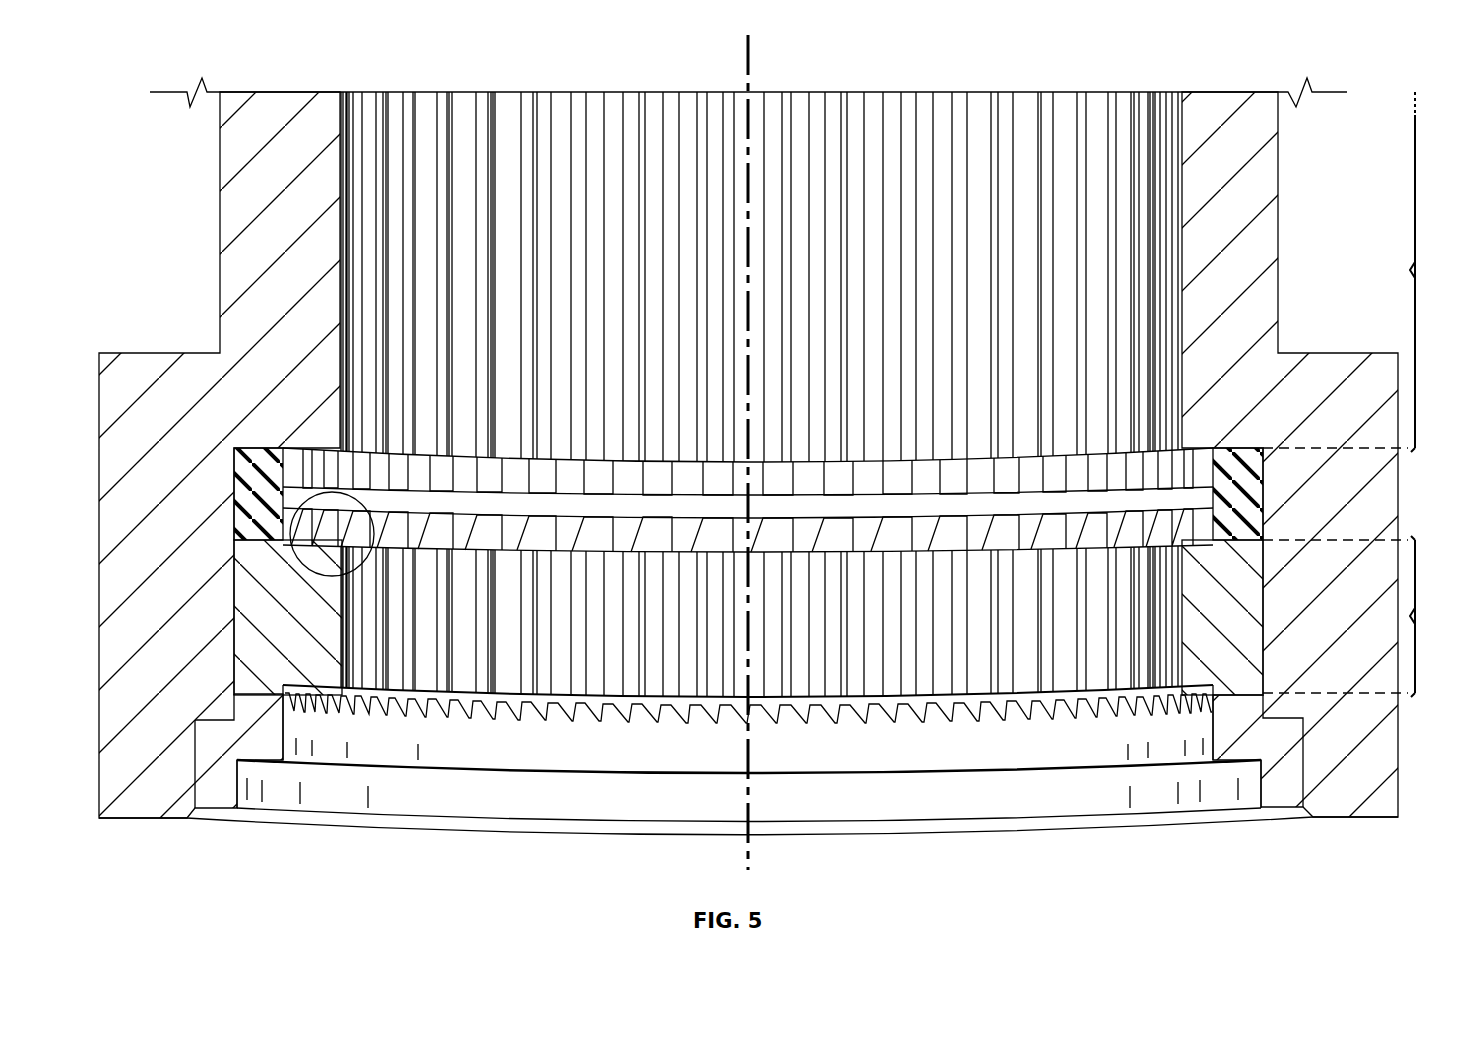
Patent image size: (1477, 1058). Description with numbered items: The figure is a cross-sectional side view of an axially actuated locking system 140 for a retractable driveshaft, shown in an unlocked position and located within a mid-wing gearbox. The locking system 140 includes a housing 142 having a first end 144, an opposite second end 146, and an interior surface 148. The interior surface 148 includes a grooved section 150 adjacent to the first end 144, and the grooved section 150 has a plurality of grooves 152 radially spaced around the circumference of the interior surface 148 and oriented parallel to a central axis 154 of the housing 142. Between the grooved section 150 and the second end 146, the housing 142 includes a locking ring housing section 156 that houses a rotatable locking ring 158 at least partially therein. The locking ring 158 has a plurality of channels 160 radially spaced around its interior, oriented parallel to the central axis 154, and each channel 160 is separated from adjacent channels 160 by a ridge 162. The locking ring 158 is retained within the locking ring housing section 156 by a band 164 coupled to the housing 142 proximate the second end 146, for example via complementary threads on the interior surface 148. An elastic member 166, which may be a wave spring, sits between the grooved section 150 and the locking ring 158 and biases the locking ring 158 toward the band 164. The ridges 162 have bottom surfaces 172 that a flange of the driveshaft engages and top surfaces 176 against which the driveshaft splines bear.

The axially actuated locking system 140 is at (1380, 76).
The housing 142 is at (220, 224).
The first end 144 is at (220, 150).
The second end 146 is at (1320, 830).
The interior surface 148 is at (1005, 100).
The grooved section 150 is at (1364, 272).
The grooves 152 is at (545, 100).
The central axis 154 is at (752, 58).
The locking ring housing section 156 is at (1364, 616).
The locking ring 158 is at (240, 642).
The channels 160 is at (592, 688).
The ridge 162 is at (855, 690).
The band 164 is at (460, 800).
The elastic member 166 is at (232, 480).
The bottom surfaces 172 is at (515, 697).
The top surfaces 176 is at (300, 566).